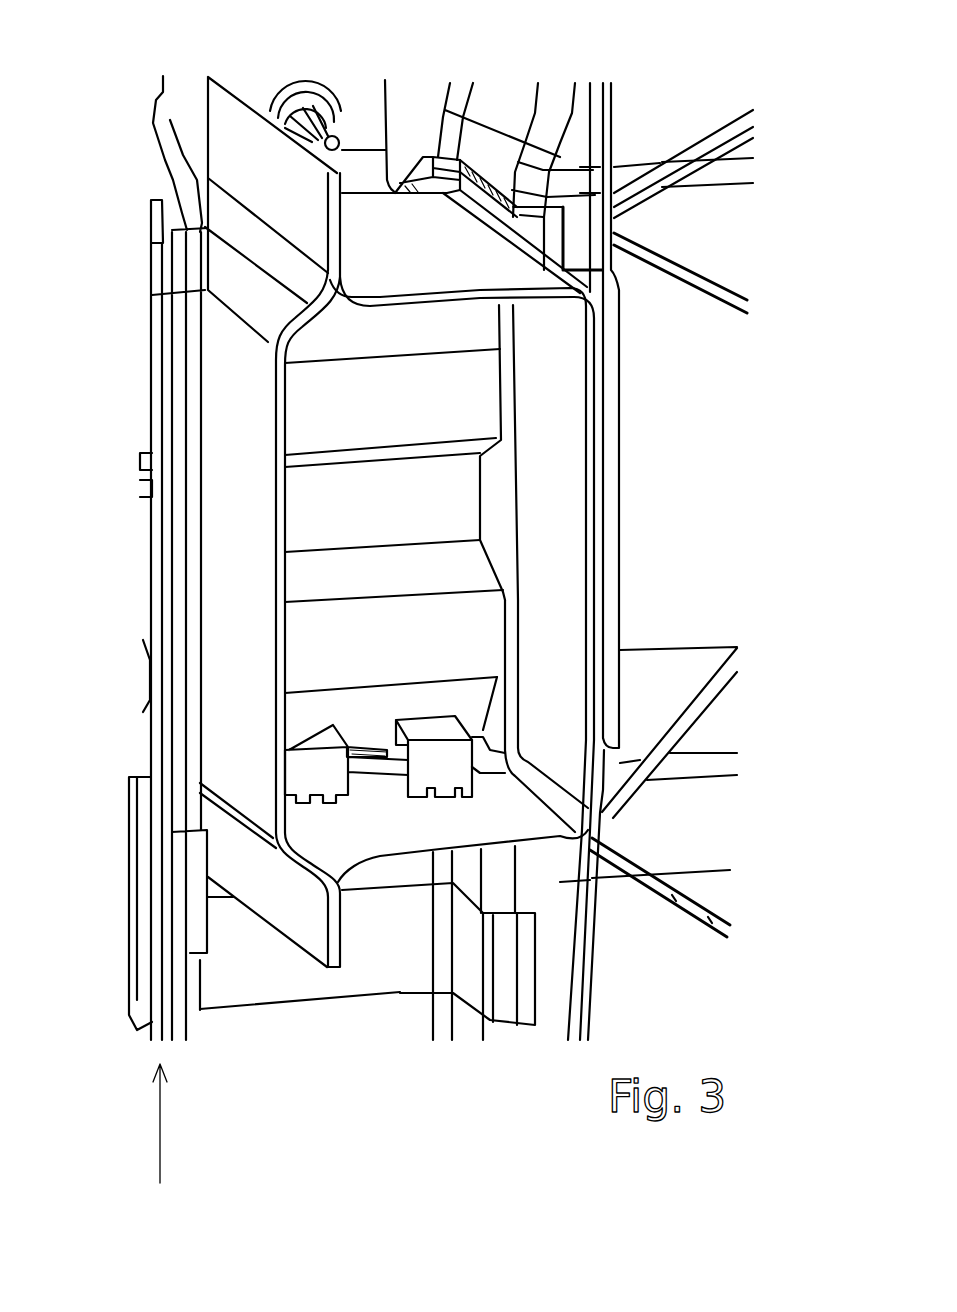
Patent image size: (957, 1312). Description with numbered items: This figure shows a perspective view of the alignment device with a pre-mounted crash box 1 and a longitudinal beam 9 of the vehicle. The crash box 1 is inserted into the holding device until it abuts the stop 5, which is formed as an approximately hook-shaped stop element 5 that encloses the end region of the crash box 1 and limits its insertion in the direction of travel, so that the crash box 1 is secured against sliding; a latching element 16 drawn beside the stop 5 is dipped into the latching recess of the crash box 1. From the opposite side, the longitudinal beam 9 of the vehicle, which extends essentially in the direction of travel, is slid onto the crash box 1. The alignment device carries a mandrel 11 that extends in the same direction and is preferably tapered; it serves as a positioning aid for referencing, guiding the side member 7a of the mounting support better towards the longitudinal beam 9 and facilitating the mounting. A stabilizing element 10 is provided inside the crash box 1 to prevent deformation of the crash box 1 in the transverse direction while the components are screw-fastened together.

The crash box 1 is at (492, 502).
The stop 5 is at (437, 770).
The longitudinal beam 7a is at (146, 1140).
The longitudinal beam 9 is at (553, 624).
The stabilizing element 10 is at (462, 401).
The mandrel 11 is at (346, 128).
The slider 16 is at (345, 748).